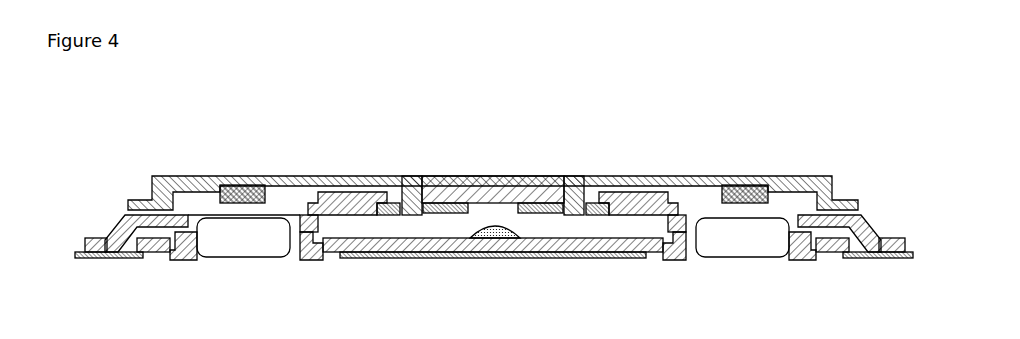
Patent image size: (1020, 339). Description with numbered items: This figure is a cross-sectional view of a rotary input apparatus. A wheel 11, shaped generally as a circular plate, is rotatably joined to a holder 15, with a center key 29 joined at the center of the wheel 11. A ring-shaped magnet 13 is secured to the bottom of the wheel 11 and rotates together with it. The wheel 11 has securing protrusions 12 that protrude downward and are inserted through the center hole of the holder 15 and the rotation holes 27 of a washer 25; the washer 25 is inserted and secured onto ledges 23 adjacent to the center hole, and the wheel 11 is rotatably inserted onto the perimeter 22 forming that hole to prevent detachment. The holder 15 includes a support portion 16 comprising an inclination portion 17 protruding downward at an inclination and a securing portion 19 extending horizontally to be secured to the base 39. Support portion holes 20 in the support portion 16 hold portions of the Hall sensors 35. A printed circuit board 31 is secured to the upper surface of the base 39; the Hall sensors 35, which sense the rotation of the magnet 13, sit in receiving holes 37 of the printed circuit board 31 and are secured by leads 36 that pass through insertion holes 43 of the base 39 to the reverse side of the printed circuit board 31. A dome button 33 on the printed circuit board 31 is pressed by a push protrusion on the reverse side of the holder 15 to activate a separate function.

The wheel 11 is at (175, 176).
The securing protrusions 12 is at (415, 215).
The magnet 13 is at (252, 176).
The holder 15 is at (348, 176).
The support portion 16 is at (857, 216).
The inclination portion 17 is at (124, 215).
The securing portion 19 is at (92, 240).
The support portion holes 20 is at (213, 215).
The perimeter 22 is at (327, 176).
The ledges 23 is at (383, 215).
The washer 25 is at (470, 176).
The rotation holes 27 is at (498, 146).
The center key 29 is at (495, 176).
The printed circuit board 31 is at (627, 258).
The dome button 33 is at (492, 238).
The Hall sensors 35 is at (245, 243).
The leads 36 is at (315, 260).
The receiving holes 37 is at (175, 260).
The base 39 is at (117, 258).
The insertion holes 43 is at (152, 252).